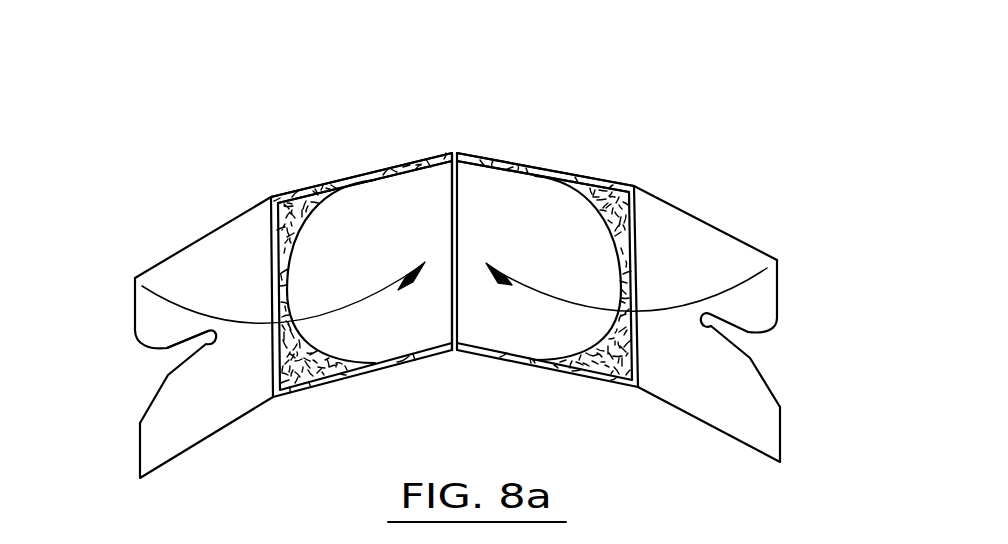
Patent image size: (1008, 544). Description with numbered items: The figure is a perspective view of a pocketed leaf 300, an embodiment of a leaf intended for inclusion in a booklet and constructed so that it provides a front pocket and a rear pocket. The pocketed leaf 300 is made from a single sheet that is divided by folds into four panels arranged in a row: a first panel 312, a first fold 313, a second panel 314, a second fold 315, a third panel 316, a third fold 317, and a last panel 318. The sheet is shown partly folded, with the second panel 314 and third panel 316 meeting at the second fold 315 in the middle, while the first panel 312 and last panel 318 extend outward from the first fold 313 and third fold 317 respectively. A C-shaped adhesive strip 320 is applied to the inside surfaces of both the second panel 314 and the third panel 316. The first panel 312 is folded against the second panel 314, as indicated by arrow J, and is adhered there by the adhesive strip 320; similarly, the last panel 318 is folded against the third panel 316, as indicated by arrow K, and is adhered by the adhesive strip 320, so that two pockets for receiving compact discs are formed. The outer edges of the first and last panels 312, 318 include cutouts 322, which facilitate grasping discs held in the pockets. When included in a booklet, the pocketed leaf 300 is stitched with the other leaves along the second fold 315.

The pocketed leaf 300 is at (823, 32).
The first panel 312 is at (150, 262).
The first fold 313 is at (267, 190).
The second panel 314 is at (388, 163).
The second fold 315 is at (453, 148).
The third panel 316 is at (557, 163).
The third fold 317 is at (640, 183).
The last panel 318 is at (723, 223).
The adhesive strip 320 is at (312, 367).
The cutouts 322 is at (145, 372).